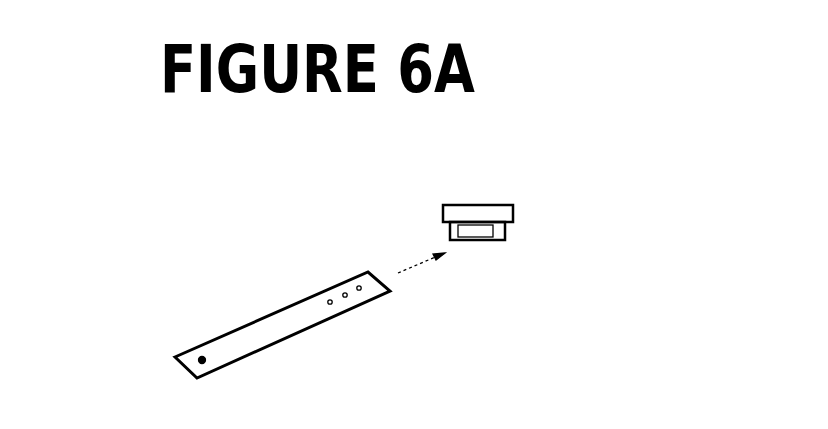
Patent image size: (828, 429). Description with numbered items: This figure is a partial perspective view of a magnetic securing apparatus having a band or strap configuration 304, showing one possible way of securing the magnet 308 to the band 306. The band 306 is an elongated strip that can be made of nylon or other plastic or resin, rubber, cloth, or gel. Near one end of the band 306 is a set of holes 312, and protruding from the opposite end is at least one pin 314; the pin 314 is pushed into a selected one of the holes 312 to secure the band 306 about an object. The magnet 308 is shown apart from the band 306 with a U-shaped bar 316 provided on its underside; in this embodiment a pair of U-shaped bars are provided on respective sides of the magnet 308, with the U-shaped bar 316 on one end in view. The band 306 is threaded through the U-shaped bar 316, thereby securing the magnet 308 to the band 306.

The band or strap configuration 304 is at (250, 208).
The band 306 is at (273, 328).
The magnet 308 is at (498, 217).
The set of holes 312 is at (359, 278).
The pin 314 is at (195, 347).
The U-shaped bar 316 is at (522, 227).